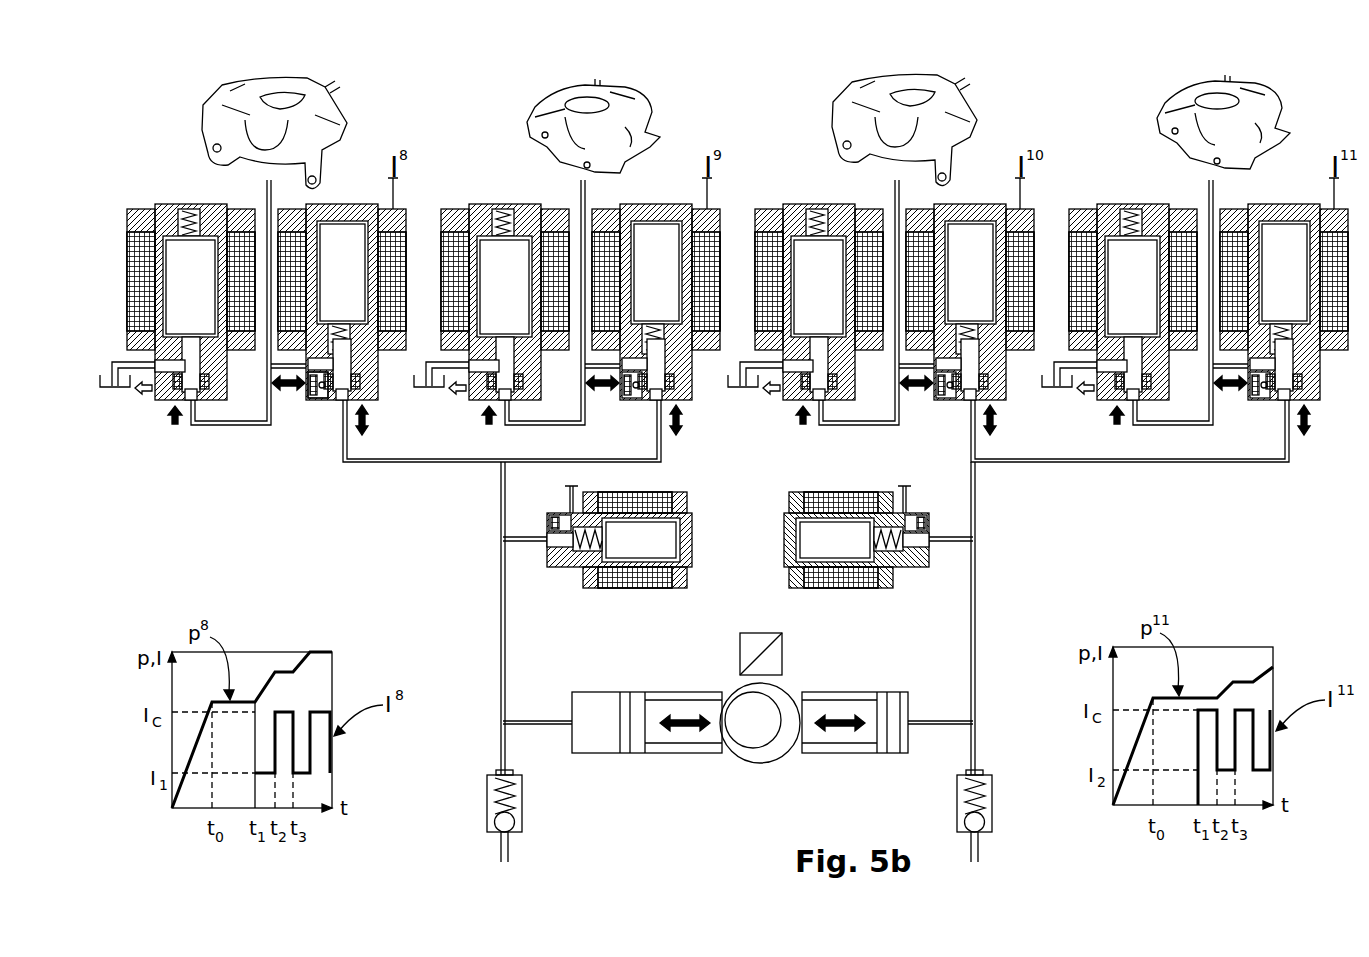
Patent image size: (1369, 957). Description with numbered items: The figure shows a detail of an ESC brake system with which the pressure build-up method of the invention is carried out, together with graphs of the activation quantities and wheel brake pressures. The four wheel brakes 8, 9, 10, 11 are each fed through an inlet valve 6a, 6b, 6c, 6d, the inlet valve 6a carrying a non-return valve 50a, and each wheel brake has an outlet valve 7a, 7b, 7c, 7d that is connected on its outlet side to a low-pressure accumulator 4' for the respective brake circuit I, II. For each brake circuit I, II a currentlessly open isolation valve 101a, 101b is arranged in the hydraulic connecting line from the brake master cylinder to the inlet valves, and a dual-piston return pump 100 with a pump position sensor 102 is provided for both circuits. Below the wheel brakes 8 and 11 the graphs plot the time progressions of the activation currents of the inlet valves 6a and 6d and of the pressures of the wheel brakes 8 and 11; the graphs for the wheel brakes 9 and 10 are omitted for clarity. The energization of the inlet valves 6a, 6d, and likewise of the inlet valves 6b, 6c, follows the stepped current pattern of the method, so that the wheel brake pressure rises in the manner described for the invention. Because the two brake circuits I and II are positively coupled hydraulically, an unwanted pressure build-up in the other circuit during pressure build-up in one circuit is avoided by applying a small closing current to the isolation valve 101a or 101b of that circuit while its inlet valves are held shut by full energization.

The outlet valve 7a is at (170, 209).
The outlet valve 7b is at (484, 209).
The outlet valve 7c is at (798, 209).
The outlet valve 7d is at (1112, 209).
The inlet valve 6a is at (355, 209).
The inlet valve 6b is at (669, 209).
The inlet valve 6c is at (983, 209).
The inlet valve 6d is at (1297, 209).
The wheel brake 8 is at (232, 86).
The wheel brake 9 is at (548, 82).
The wheel brake 10 is at (860, 80).
The wheel brake 11 is at (1175, 80).
The low-pressure accumulator 4' is at (598, 408).
The non-return valve 50a is at (315, 400).
The dual-piston return pump 100 is at (698, 775).
The isolation valve 101a is at (593, 590).
The isolation valve 101b is at (883, 590).
The pump position sensor 102 is at (760, 633).
The brake circuit I is at (975, 592).
The brake circuit II is at (501, 592).